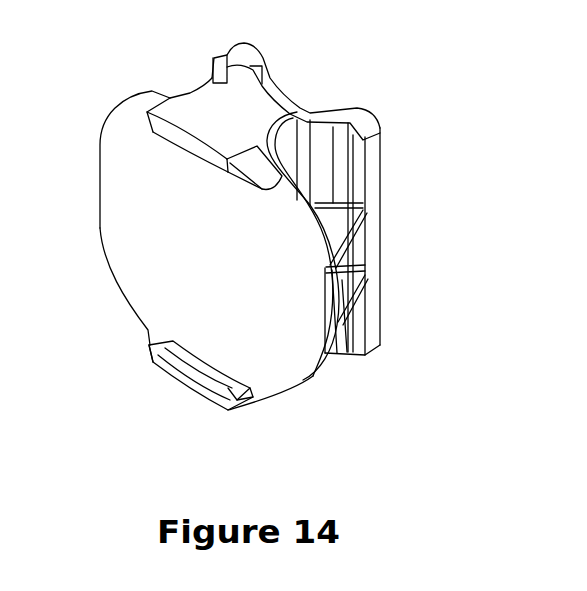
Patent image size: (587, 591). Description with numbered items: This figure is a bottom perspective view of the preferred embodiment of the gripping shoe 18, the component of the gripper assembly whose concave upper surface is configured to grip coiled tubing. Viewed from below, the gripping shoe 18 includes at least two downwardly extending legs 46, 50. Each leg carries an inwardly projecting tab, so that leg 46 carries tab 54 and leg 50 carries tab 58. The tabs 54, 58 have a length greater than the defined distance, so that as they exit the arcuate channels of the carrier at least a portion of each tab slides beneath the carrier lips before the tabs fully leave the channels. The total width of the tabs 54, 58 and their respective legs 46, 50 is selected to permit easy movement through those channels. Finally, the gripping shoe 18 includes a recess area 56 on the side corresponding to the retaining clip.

The gripping shoe 18 is at (373, 302).
The downwardly extending leg 46 is at (200, 100).
The downwardly extending leg 50 is at (247, 402).
The inwardly projecting tab 54 is at (281, 186).
The recess area 56 is at (330, 340).
The inwardly projecting tab 58 is at (147, 350).